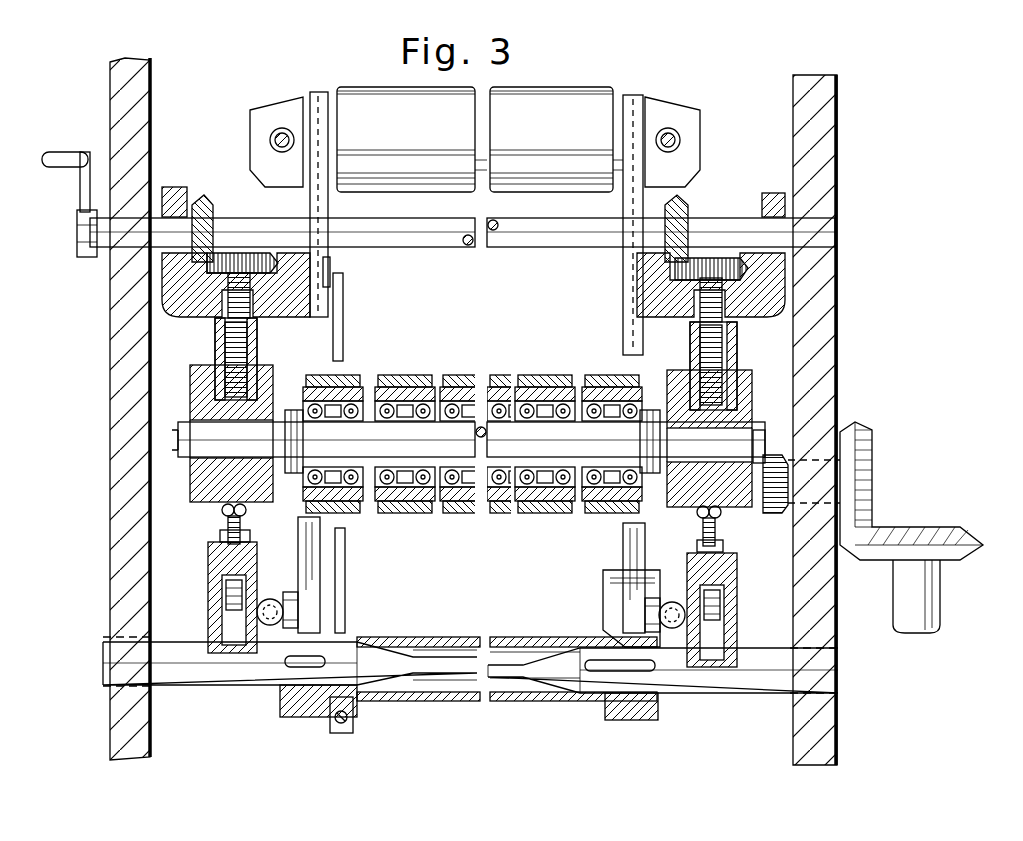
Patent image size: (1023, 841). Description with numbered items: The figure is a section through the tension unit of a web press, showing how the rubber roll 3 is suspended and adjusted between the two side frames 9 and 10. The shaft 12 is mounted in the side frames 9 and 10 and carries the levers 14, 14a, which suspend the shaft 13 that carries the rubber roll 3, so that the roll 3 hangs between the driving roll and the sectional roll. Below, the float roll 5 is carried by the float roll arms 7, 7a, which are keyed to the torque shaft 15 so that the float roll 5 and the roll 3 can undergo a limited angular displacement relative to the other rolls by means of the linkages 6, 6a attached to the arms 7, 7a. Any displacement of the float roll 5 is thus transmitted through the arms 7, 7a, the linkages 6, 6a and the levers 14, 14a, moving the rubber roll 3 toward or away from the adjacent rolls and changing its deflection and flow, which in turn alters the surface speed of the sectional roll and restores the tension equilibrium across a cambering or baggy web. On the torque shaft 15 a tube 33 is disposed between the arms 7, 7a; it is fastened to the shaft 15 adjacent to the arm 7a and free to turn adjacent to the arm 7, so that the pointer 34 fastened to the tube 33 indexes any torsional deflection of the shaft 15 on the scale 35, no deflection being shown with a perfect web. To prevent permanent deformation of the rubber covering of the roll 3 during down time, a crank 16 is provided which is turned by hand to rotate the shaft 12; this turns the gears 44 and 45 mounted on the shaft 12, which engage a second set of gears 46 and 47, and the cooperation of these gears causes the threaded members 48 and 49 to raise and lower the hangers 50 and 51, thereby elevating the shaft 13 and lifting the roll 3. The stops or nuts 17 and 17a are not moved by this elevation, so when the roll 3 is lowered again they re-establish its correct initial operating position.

The rubber roll 3 is at (433, 377).
The float roll 5 is at (560, 95).
The linkage 6 is at (270, 600).
The linkage 6a is at (672, 600).
The float roll arm 7 is at (318, 201).
The float roll arm 7a is at (628, 208).
The side frame 9 is at (151, 117).
The side frame 10 is at (838, 140).
The shaft 12 is at (437, 249).
The shaft 13 is at (540, 447).
The lever 14 is at (215, 333).
The lever 14a is at (693, 349).
The torque shaft 15 is at (445, 660).
The crank 16 is at (80, 200).
The stop or nut 17 is at (222, 515).
The stop or nut 17a is at (700, 518).
The tube 33 is at (553, 701).
The pointer 34 is at (345, 311).
The scale 35 is at (333, 264).
The gear 44 is at (213, 202).
The gear 45 is at (688, 203).
The gear 46 is at (258, 317).
The gear 47 is at (736, 260).
The threaded member 48 is at (226, 352).
The threaded member 49 is at (737, 355).
The hanger 50 is at (190, 400).
The hanger 51 is at (752, 394).